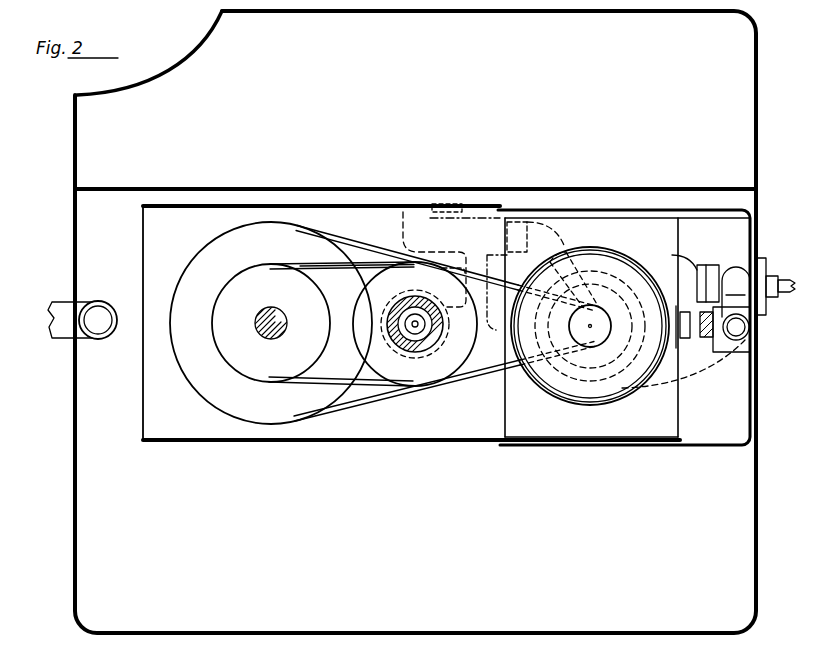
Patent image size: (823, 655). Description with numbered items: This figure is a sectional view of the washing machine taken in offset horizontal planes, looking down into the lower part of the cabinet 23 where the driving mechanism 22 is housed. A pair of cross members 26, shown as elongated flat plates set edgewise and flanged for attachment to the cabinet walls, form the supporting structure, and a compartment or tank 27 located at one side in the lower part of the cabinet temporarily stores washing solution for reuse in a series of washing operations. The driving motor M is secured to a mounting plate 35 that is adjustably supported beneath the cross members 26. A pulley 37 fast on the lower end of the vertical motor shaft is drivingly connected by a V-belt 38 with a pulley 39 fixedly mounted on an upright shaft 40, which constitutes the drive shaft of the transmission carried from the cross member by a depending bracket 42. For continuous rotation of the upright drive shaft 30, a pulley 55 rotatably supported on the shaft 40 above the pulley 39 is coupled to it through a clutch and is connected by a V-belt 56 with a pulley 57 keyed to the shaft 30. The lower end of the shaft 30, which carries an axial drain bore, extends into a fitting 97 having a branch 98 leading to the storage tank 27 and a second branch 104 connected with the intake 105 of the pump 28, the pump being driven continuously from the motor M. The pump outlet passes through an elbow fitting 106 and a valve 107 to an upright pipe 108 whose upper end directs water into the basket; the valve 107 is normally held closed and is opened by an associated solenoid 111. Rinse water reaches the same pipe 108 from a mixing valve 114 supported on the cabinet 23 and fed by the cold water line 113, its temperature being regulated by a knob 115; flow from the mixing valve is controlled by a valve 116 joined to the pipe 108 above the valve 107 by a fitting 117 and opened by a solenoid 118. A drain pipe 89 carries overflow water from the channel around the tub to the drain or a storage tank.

The driving mechanism 22 is at (226, 432).
The casing or cabinet 23 is at (74, 158).
The cross members 26 is at (697, 212).
The compartment or tank 27 is at (748, 146).
The pump 28 is at (618, 278).
The drive shaft 30 is at (405, 299).
The mounting plate 35 is at (679, 418).
The pulley 37 is at (564, 324).
The V-belt 38 is at (486, 371).
The pulley 39 is at (212, 392).
The upright shaft 40 is at (270, 336).
The depending bracket 42 is at (150, 398).
The pulley 55 is at (231, 288).
The V-belt 56 is at (318, 268).
The pulley 57 is at (357, 295).
The drain pipe 89 is at (67, 339).
The fitting 97 is at (441, 341).
The branch 98 is at (402, 229).
The second branch 104 is at (524, 252).
The intake 105 is at (563, 237).
The elbow fitting 106 is at (698, 383).
The valve 107 is at (752, 343).
The upright pipe 108 is at (752, 327).
The solenoid 111 is at (707, 339).
The cold water line 113 is at (785, 280).
The mixing valve 114 is at (672, 256).
The knob 115 is at (772, 297).
The valve 116 is at (727, 271).
The fitting 117 is at (727, 289).
The solenoid 118 is at (702, 265).
The driving motor M is at (576, 405).